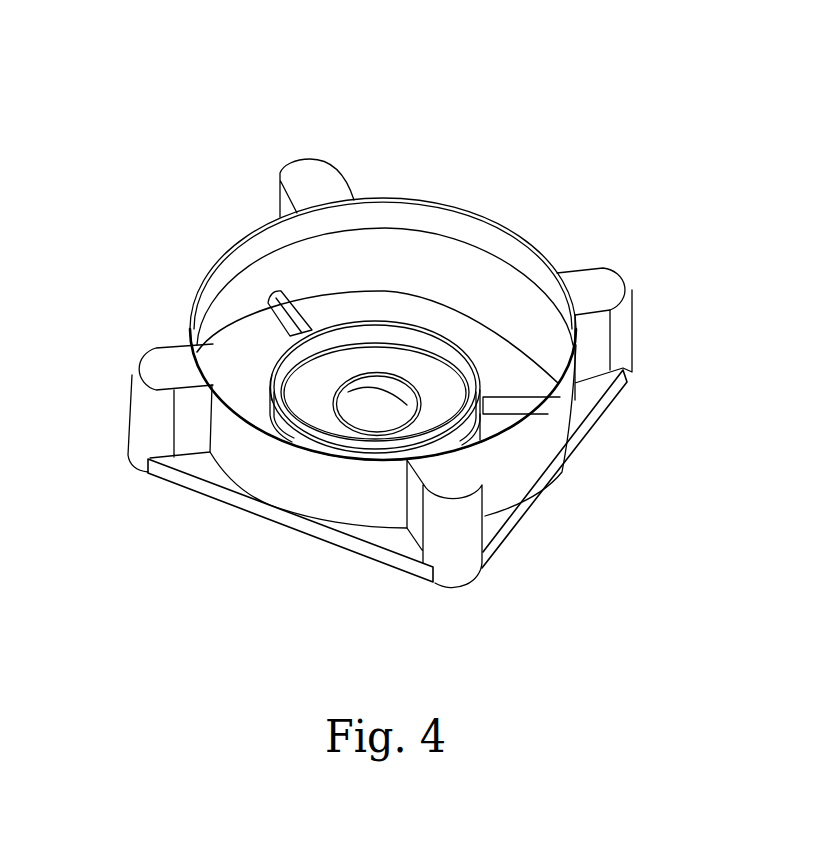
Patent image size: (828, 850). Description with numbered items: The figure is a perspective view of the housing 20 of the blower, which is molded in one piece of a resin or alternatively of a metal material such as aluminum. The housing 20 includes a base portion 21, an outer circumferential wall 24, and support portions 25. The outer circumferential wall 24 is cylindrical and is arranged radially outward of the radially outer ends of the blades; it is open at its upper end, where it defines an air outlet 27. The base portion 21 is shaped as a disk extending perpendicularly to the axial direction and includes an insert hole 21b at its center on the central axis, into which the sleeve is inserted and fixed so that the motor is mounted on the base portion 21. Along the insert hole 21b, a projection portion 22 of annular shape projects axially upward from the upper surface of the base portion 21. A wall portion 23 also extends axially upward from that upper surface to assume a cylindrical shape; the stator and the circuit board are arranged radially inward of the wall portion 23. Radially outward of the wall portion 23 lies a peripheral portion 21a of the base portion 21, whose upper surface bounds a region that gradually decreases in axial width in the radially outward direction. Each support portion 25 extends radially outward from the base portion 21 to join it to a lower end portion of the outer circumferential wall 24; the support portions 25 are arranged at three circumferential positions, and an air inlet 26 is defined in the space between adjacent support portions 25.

The housing 20 is at (552, 292).
The base portion 21 is at (347, 363).
The peripheral portion 21a is at (275, 393).
The insert hole 21b is at (400, 403).
The projection portion 22 is at (385, 382).
The wall portion 23 is at (460, 373).
The outer circumferential wall 24 is at (227, 313).
The support portion 25 is at (297, 317).
The air inlet 26 is at (512, 373).
The air outlet 27 is at (437, 220).